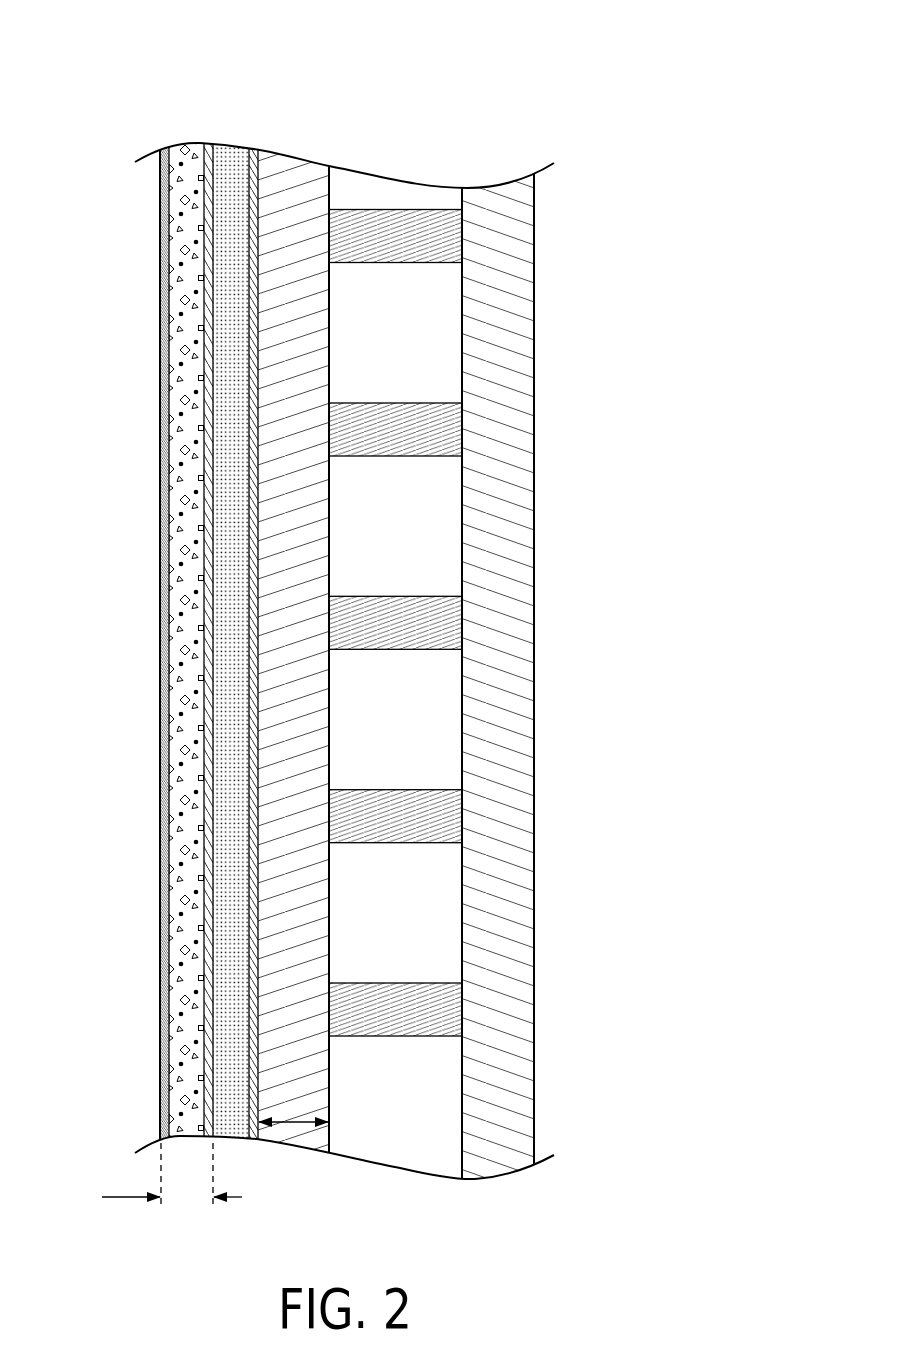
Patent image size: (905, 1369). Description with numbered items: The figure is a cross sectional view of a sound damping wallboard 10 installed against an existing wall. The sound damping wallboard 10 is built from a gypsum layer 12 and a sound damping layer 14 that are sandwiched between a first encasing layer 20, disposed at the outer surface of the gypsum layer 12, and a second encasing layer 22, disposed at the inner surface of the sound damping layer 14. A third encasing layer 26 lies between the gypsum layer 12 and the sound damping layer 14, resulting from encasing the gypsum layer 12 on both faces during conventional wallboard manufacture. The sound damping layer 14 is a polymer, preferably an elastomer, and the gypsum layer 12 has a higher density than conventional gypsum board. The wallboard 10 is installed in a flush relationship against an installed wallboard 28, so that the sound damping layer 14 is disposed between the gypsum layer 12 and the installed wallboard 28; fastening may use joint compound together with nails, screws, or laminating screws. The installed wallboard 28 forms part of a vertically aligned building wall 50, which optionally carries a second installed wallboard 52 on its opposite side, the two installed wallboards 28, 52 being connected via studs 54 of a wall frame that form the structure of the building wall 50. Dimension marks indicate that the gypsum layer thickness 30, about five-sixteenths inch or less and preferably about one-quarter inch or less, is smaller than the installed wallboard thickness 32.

The sound damping wallboard 10 is at (208, 114).
The gypsum layer 12 is at (188, 738).
The sound damping layer 14 is at (232, 663).
The first encasing layer 20 is at (163, 531).
The second encasing layer 22 is at (253, 428).
The third encasing layer 26 is at (210, 252).
The installed wallboard 28 is at (285, 114).
The gypsum layer thickness 30 is at (121, 1197).
The installed wallboard thickness 32 is at (293, 1122).
The building wall 50 is at (472, 600).
The second installed wallboard 52 is at (497, 710).
The studs 54 is at (437, 433).